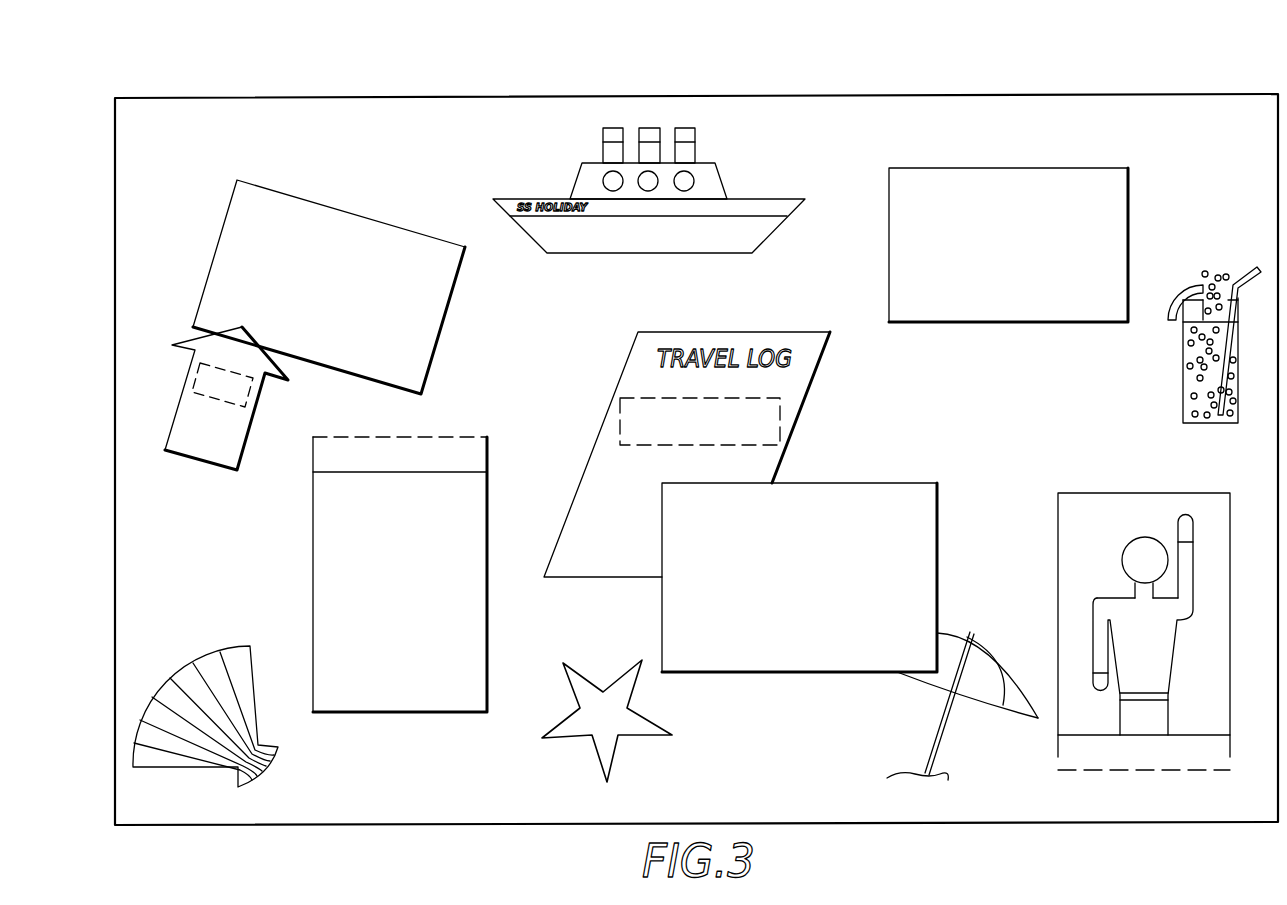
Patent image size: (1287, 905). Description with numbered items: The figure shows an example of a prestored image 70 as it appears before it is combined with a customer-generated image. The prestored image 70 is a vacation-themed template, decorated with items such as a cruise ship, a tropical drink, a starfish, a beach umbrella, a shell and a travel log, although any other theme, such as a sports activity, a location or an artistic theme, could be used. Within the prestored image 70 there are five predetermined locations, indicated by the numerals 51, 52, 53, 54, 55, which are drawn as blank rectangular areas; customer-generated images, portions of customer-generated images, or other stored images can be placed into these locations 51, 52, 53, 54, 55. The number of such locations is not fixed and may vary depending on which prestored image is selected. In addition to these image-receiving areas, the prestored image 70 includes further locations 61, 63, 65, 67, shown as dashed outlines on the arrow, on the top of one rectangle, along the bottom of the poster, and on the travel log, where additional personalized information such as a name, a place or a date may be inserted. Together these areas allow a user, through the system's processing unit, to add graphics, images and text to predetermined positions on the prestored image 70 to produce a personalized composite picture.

The prestored image 70 is at (914, 80).
The location for receiving a customer-generated image 51 is at (432, 317).
The location for receiving a customer-generated image 52 is at (426, 560).
The location for receiving a customer-generated image 53 is at (925, 595).
The location for receiving a customer-generated image 55 is at (1115, 245).
The location for receiving a customer-generated image 54 is at (1123, 636).
The location for personalized information 61 is at (193, 418).
The location for personalized information 63 is at (482, 457).
The location for personalized information 65 is at (1233, 770).
The location for personalized information 67 is at (777, 420).